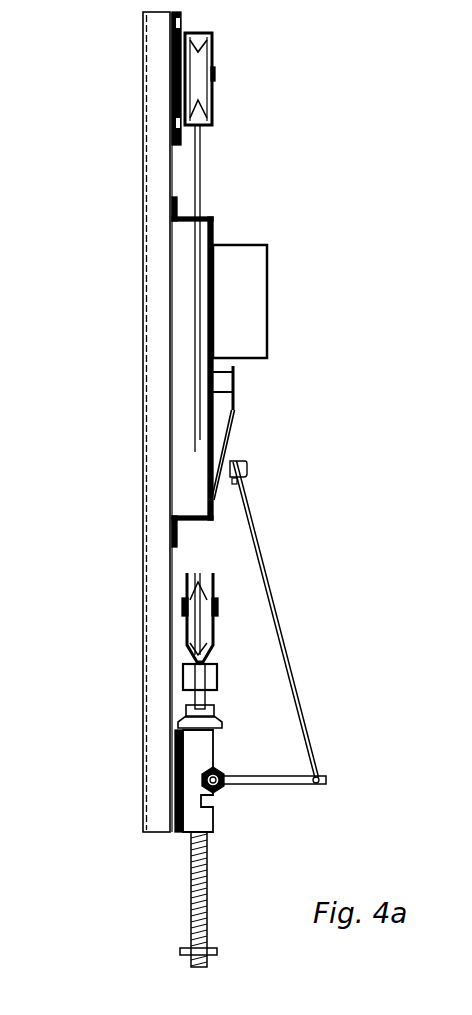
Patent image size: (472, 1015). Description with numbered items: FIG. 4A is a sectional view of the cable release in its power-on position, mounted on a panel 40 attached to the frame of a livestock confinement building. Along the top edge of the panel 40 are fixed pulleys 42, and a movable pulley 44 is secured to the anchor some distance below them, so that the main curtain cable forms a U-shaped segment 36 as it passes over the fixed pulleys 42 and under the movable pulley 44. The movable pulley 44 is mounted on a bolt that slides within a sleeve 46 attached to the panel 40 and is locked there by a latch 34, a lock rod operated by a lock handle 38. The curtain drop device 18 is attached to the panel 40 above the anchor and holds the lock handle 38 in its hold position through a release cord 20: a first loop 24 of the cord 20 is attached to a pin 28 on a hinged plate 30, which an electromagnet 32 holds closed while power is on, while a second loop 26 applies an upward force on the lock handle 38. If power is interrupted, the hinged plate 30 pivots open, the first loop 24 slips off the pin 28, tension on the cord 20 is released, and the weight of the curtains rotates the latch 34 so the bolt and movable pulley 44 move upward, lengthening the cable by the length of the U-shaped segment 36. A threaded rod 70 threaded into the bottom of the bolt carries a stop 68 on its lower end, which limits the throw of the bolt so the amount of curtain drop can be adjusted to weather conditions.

The curtain drop device 18 is at (270, 322).
The release cord 20 is at (276, 620).
The first loop 24 is at (243, 489).
The second loop 26 is at (318, 772).
The pin 28 is at (243, 463).
The hinged plate 30 is at (232, 430).
The electromagnet 32 is at (233, 382).
The latch 34 is at (225, 746).
The U-shaped segment 36 is at (202, 186).
The lock handle 38 is at (255, 788).
The panel 40 is at (143, 458).
The fixed pulleys 42 is at (212, 57).
The movable pulley 44 is at (207, 590).
The sleeve 46 is at (183, 742).
The stop 68 is at (179, 951).
The threaded rod 70 is at (207, 893).